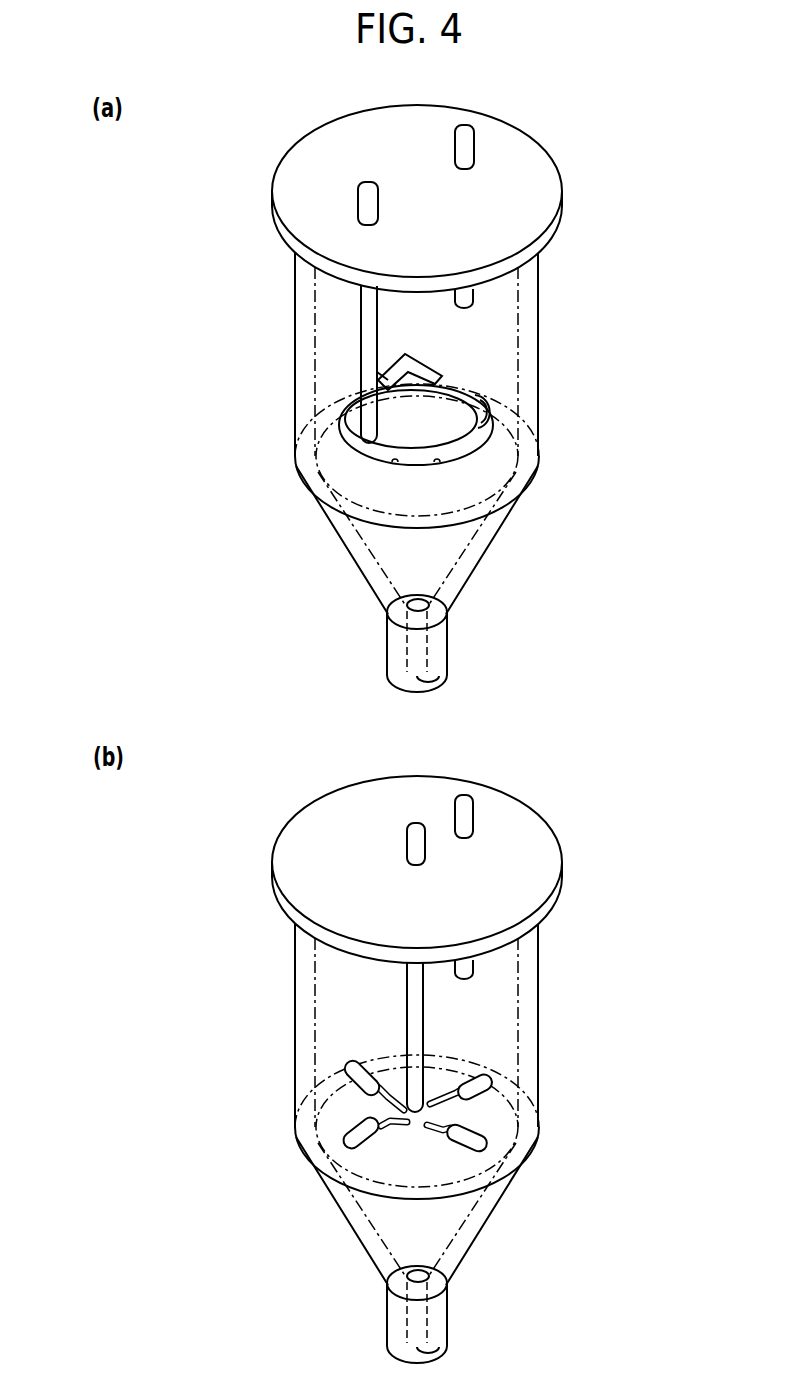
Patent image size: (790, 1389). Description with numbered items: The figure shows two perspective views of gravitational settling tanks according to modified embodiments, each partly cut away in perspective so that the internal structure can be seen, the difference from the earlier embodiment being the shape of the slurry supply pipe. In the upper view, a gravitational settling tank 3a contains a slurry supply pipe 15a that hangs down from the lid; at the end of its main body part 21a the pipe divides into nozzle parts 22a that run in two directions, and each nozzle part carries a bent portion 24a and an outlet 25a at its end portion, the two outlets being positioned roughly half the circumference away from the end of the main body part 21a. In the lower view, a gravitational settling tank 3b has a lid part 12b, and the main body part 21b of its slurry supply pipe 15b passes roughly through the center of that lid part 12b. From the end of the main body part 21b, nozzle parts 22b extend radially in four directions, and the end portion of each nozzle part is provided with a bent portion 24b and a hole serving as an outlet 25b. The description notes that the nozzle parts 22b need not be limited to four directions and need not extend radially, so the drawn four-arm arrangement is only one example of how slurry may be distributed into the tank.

The gravitational settling tank 3a is at (248, 172).
The slurry supply pipe 15a is at (345, 302).
The main body part 21a is at (372, 365).
The nozzle parts 22a is at (450, 455).
The bent portion 24a is at (437, 352).
The outlet 25a is at (462, 393).
The gravitational settling tank 3b is at (255, 810).
The lid part 12b is at (528, 866).
The slurry supply pipe 15b is at (378, 982).
The main body part 21b is at (410, 1044).
The nozzle parts 22b is at (455, 1113).
The bent portion 24b is at (345, 1147).
The hole (outlet) 25b is at (357, 1150).